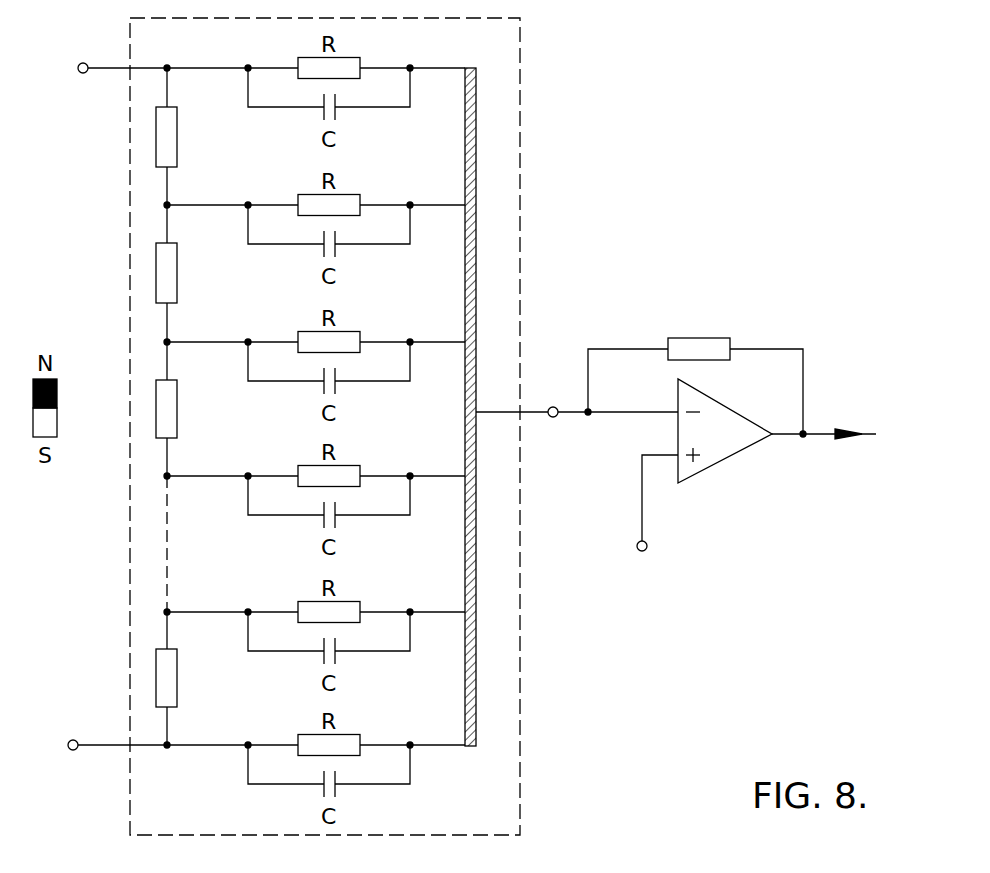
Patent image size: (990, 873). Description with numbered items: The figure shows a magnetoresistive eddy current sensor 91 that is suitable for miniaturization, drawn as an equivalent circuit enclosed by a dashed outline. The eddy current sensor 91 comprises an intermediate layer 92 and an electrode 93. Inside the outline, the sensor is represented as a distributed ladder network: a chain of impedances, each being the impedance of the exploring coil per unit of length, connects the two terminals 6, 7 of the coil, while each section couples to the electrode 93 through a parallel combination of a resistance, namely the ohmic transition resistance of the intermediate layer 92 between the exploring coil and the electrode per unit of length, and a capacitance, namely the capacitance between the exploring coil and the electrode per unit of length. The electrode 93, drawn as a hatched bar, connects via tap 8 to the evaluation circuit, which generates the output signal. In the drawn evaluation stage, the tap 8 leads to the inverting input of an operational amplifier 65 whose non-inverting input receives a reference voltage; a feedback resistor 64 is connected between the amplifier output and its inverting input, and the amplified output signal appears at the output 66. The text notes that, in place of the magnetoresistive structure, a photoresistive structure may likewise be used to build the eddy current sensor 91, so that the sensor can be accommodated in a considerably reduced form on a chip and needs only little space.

The input terminal 6 is at (157, 767).
The input terminal 7 is at (162, 52).
The tap 8 is at (577, 396).
The feedback resistor 64 is at (715, 330).
The operational amplifier 65 is at (722, 440).
The output 66 is at (828, 387).
The eddy current sensor 91 is at (547, 100).
The intermediate layer 92 is at (407, 688).
The electrode 93 is at (475, 258).